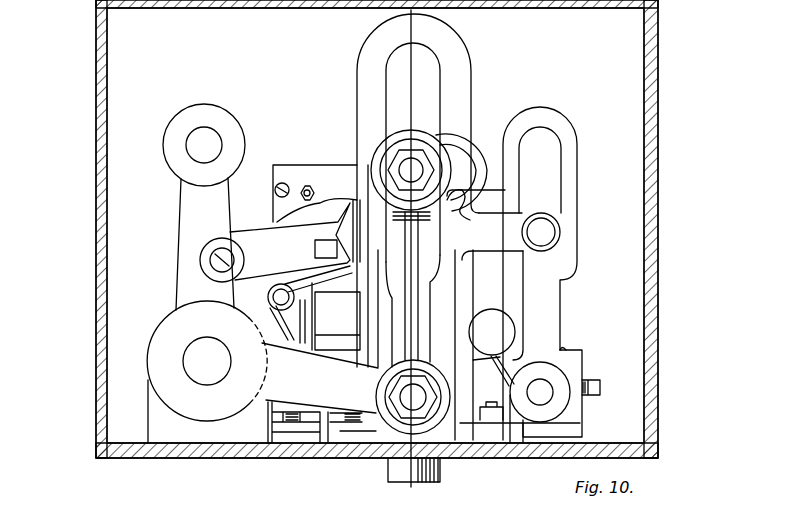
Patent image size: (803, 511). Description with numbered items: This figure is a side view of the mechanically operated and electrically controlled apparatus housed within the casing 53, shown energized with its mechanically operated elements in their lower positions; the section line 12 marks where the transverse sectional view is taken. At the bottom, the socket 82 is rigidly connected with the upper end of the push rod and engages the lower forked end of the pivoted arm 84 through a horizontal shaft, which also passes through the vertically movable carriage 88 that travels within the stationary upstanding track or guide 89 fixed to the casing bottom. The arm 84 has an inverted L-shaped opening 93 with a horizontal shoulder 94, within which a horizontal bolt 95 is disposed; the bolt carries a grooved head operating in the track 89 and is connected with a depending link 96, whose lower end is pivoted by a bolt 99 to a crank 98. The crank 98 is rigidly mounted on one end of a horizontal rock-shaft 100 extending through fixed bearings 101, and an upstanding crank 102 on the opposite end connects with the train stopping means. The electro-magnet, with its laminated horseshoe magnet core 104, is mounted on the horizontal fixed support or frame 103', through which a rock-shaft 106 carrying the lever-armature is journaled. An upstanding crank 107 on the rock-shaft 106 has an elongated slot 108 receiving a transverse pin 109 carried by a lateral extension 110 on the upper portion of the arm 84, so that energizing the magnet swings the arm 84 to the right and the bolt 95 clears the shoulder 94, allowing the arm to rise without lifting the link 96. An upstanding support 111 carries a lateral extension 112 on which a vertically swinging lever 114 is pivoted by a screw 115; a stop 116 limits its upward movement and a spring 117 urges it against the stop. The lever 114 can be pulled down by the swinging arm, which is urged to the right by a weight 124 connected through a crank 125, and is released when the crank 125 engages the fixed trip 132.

The casing 53 is at (96, 207).
The section line 12— 12 is at (458, 258).
The socket 82 is at (401, 474).
The pivoted arm 84 is at (388, 321).
The vertically movable carriage 88 is at (460, 330).
The track or guide 89 is at (360, 78).
The inverted L-shaped opening 93 is at (464, 166).
The horizontal shoulder 94 is at (505, 190).
The horizontal bolt 95 is at (345, 168).
The depending link 96 is at (401, 279).
The crank 98 is at (320, 393).
The bolt 99 is at (421, 404).
The horizontal rock-shaft 100 is at (205, 348).
The fixed bearings 101 is at (177, 412).
The upstanding crank 102 is at (203, 113).
The horizontal fixed support or frame 103' is at (592, 335).
The horseshoe magnet core 104 is at (305, 165).
The horizontal rock-shaft 106 is at (546, 393).
The upstanding crank 107 is at (573, 130).
The elongated slot or opening 108 is at (560, 163).
The transverse pin 109 is at (546, 232).
The lateral extension 110 is at (492, 236).
The upstanding support 111 is at (300, 321).
The lateral extension 112 is at (253, 233).
The vertically swinging lever 114 is at (295, 240).
The screw 115 is at (215, 261).
The stop 116 is at (328, 205).
The spring 117 is at (270, 327).
The weight 124 is at (497, 328).
The crank 125 is at (509, 384).
The fixed trip 132 is at (530, 372).